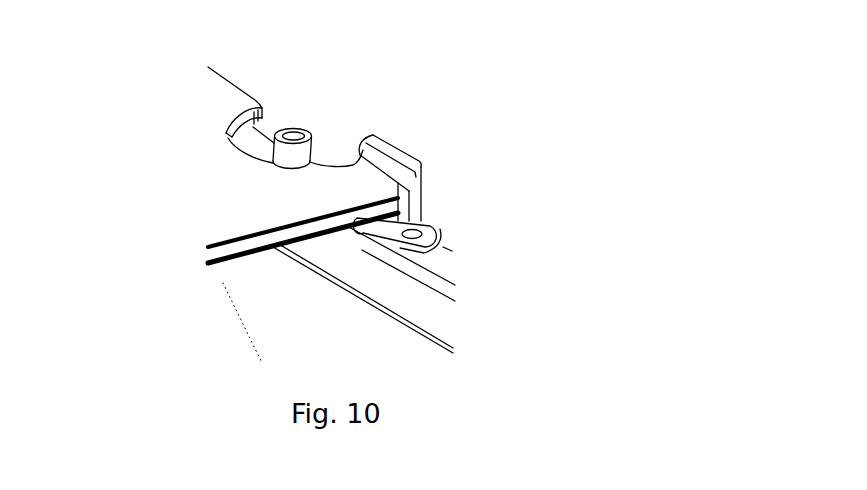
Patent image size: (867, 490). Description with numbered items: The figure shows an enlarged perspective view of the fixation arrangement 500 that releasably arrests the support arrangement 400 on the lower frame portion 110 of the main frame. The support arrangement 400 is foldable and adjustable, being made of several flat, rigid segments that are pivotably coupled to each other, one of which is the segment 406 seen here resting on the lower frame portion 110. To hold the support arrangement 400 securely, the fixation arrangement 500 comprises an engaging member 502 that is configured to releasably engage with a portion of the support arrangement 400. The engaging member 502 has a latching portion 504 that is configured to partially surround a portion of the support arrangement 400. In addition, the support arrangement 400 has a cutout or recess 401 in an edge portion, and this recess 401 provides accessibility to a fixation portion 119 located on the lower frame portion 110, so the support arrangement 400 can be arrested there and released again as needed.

The support arrangement 400 is at (246, 76).
The segment 406 is at (233, 187).
The fixation portion 119 is at (306, 125).
The cutout or recess 401 is at (336, 147).
The fixation arrangement 500 is at (488, 182).
The engaging member 502 is at (433, 185).
The latching portion 504 is at (442, 214).
The lower frame portion 110 is at (392, 299).